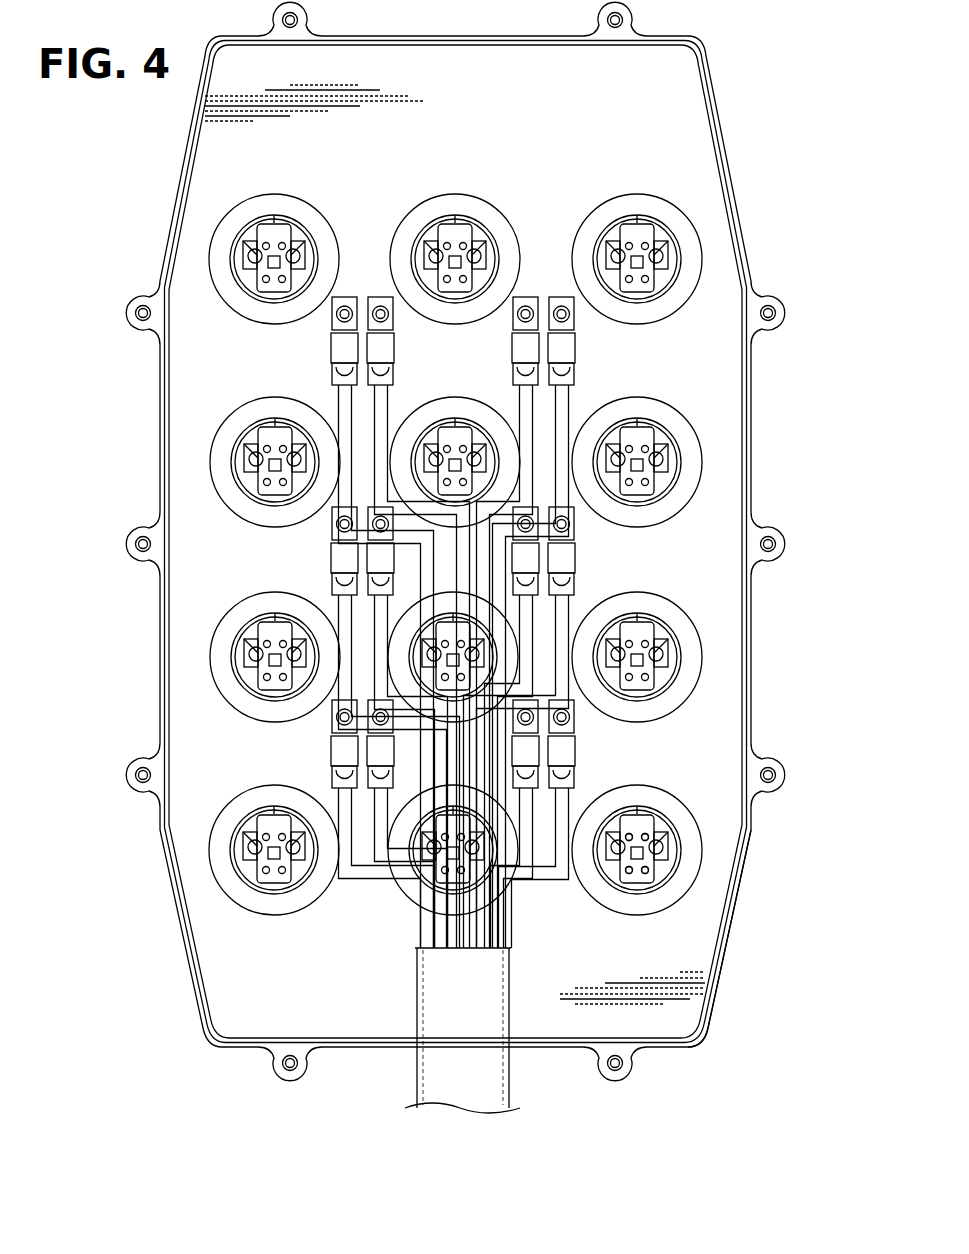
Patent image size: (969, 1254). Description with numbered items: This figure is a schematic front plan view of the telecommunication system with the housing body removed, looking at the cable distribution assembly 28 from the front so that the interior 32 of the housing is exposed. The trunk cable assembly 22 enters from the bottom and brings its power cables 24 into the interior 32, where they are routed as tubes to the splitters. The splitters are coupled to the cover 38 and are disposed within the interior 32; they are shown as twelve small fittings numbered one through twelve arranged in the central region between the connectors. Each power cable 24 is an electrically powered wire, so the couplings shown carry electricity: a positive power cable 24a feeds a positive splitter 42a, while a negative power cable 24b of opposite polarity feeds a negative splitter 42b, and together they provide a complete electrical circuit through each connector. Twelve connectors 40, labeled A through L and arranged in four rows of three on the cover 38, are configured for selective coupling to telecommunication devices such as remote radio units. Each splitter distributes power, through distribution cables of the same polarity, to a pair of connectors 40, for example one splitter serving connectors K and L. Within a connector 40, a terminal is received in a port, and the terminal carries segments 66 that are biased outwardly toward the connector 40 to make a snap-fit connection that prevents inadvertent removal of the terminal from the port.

The trunk cable assembly 22 is at (585, 1098).
The power cables 24 is at (396, 878).
The positive power cable 24a is at (338, 395).
The negative power cable 24b is at (338, 723).
The cable distribution assembly 28 is at (772, 172).
The interior 32 is at (245, 965).
The cover 38 is at (730, 913).
The connectors 40 is at (262, 200).
The positive splitter 42a is at (332, 316).
The negative splitter 42b is at (575, 316).
The segments 66 is at (629, 833).